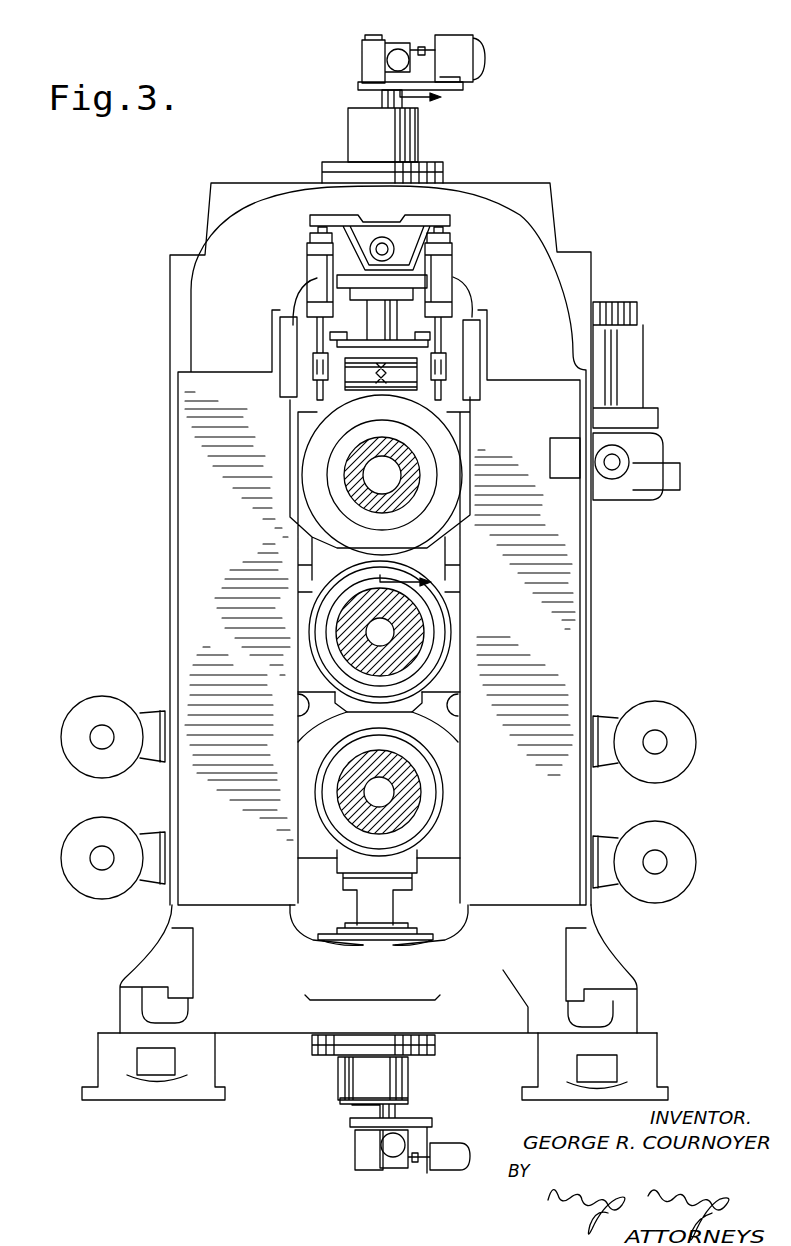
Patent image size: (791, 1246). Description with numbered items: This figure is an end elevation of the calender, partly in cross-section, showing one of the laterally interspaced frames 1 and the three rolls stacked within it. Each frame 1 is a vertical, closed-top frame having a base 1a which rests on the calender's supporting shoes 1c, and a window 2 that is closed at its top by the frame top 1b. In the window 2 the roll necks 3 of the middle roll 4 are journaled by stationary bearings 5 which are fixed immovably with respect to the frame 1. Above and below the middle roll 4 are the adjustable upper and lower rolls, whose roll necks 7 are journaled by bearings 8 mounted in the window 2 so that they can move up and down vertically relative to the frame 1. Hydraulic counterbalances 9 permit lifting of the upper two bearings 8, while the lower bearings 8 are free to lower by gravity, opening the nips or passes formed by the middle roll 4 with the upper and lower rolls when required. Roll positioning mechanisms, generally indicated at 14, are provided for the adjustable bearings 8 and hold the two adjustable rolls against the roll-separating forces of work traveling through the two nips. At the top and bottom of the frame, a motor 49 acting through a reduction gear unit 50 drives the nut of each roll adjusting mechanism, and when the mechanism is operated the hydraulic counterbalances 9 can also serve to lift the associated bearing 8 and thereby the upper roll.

The frame 1 is at (568, 528).
The base 1a is at (275, 1018).
The frame top 1b is at (470, 203).
The supporting shoe 1c is at (640, 1043).
The window 2 is at (453, 667).
The roll neck 3 is at (420, 632).
The middle roll 4 is at (413, 338).
The stationary bearing 5 is at (333, 667).
The roll neck 7 is at (402, 818).
The bearing 8 is at (423, 757).
The hydraulic counterbalance 9 is at (453, 270).
The roll positioning mechanism 14 is at (420, 146).
The motor 49 is at (450, 43).
The reduction gear unit 50 is at (383, 53).